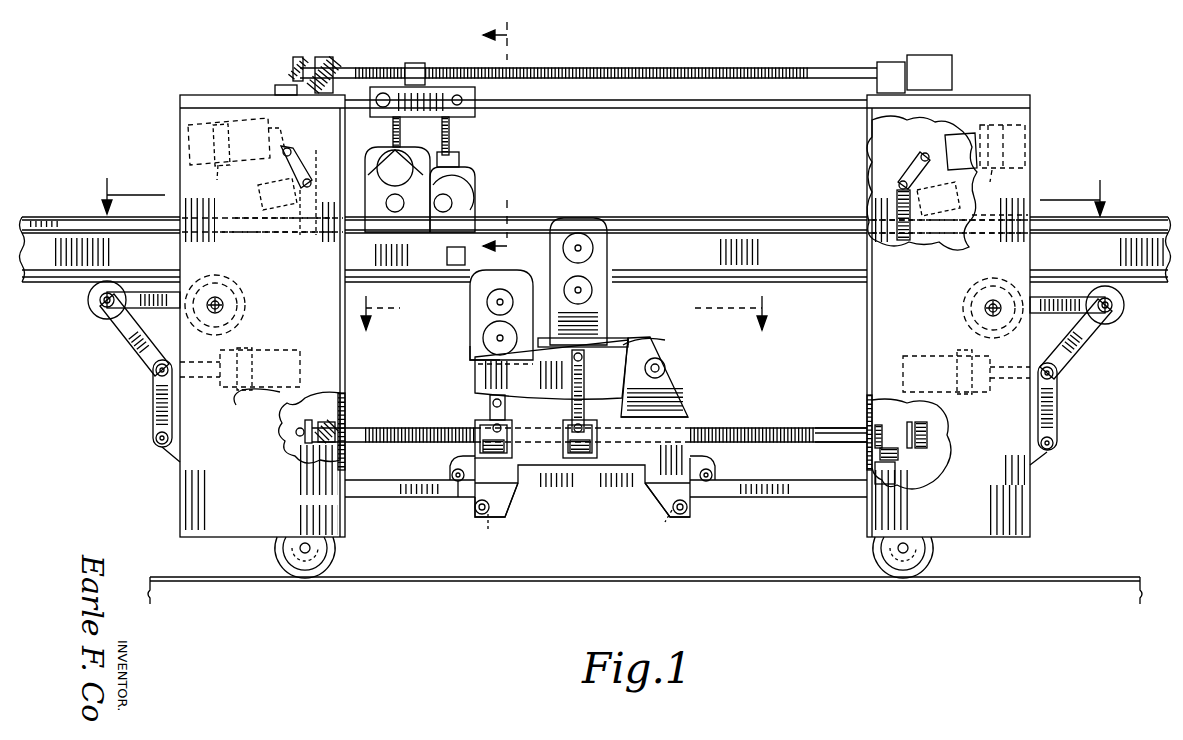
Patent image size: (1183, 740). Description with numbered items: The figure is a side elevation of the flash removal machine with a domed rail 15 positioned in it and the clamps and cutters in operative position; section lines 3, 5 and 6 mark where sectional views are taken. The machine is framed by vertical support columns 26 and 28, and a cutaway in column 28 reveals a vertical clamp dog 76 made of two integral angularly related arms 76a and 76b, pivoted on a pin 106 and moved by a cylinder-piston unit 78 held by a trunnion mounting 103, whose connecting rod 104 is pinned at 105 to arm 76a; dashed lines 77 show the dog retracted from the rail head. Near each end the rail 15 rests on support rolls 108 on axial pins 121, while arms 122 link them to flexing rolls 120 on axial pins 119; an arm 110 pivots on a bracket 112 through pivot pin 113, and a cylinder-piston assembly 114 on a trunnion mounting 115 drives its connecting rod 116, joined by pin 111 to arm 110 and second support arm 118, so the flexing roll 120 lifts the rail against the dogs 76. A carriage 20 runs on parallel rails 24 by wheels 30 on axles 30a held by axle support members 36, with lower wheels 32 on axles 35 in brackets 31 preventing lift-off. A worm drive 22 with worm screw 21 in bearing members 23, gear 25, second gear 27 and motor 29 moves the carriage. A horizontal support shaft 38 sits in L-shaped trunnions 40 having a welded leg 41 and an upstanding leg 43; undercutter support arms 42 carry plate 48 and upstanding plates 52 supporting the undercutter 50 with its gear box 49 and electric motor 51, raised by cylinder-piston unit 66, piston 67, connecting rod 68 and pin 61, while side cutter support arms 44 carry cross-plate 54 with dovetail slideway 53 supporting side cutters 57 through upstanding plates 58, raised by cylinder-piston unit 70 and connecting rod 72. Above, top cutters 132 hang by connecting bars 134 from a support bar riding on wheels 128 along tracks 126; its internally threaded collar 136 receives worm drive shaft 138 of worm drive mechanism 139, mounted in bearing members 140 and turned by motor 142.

The section line 3- 3 is at (600, 195).
The section line 5- 5 is at (562, 326).
The section line 6- 6 is at (502, 135).
The rail 15 is at (687, 216).
The carriage 20 is at (632, 461).
The worm screw 21 is at (818, 426).
The worm drive 22 is at (755, 424).
The bearing members 23 is at (918, 422).
The rails 24 is at (778, 487).
The gear 25 is at (880, 425).
The vertical support column 26 is at (272, 497).
The second gear 27 is at (898, 460).
The vertical support column 28 is at (995, 511).
The motor 29 is at (895, 474).
The wheels 30 is at (452, 472).
The axles 30a is at (455, 498).
The brackets 31 is at (500, 510).
The lower wheels 32 is at (577, 529).
The axles 35 is at (475, 512).
The axle support members 36 is at (452, 458).
The horizontal support shaft 38 is at (660, 365).
The trunnions 40 is at (682, 382).
The leg 41 is at (690, 416).
The undercutter support arms 42 is at (532, 383).
The leg 43 is at (684, 392).
The side cutter support arms 44 is at (666, 332).
The plate 48 is at (475, 362).
The gear box 49 is at (470, 306).
The undercutter 50 is at (466, 295).
The electric motor 51 is at (476, 336).
The upstanding plates 52 is at (472, 350).
The dovetail slideway 53 is at (605, 338).
The cross-plate 54 is at (626, 342).
The side cutters 57 is at (618, 248).
The upstanding plates 58 is at (609, 312).
The pin 61 is at (505, 403).
The hydraulic cylinder-piston unit 66 is at (512, 432).
The piston 67 is at (510, 450).
The connecting rod 68 is at (488, 407).
The cylinder-piston unit 70 is at (597, 432).
The connecting rod 72 is at (585, 380).
The vertical clamp dogs 76 is at (322, 178).
The arm 76a is at (910, 154).
The arm 76b is at (310, 238).
The dashed lines 77 is at (1000, 210).
The cylinder-piston unit 78 is at (197, 120).
The trunnion mounting 103 is at (606, 158).
The connecting rod 104 is at (955, 148).
The pin 105 is at (300, 145).
The pin 106 is at (300, 182).
The support rolls 108 is at (248, 304).
The arm 110 is at (153, 398).
The pin 111 is at (156, 371).
The bracket 112 is at (168, 460).
The pivot pin 113 is at (156, 438).
The cylinder-piston assembly 114 is at (285, 350).
The trunnion mounting 115 is at (243, 392).
The connecting rod 116 is at (203, 378).
The second support arm 118 is at (125, 347).
The axial pin 119 is at (102, 308).
The flexing roll 120 is at (88, 303).
The axial pin 121 is at (232, 315).
The arm 122 is at (158, 310).
The tracks 126 is at (620, 105).
The wheels 128 is at (380, 110).
The top cutters 132 is at (470, 184).
The connecting bars 134 is at (401, 134).
The internally threaded collar 136 is at (412, 63).
The worm drive shaft 138 is at (565, 66).
The worm drive mechanism 139 is at (672, 64).
The bearing members 140 is at (323, 57).
The motor 142 is at (930, 55).